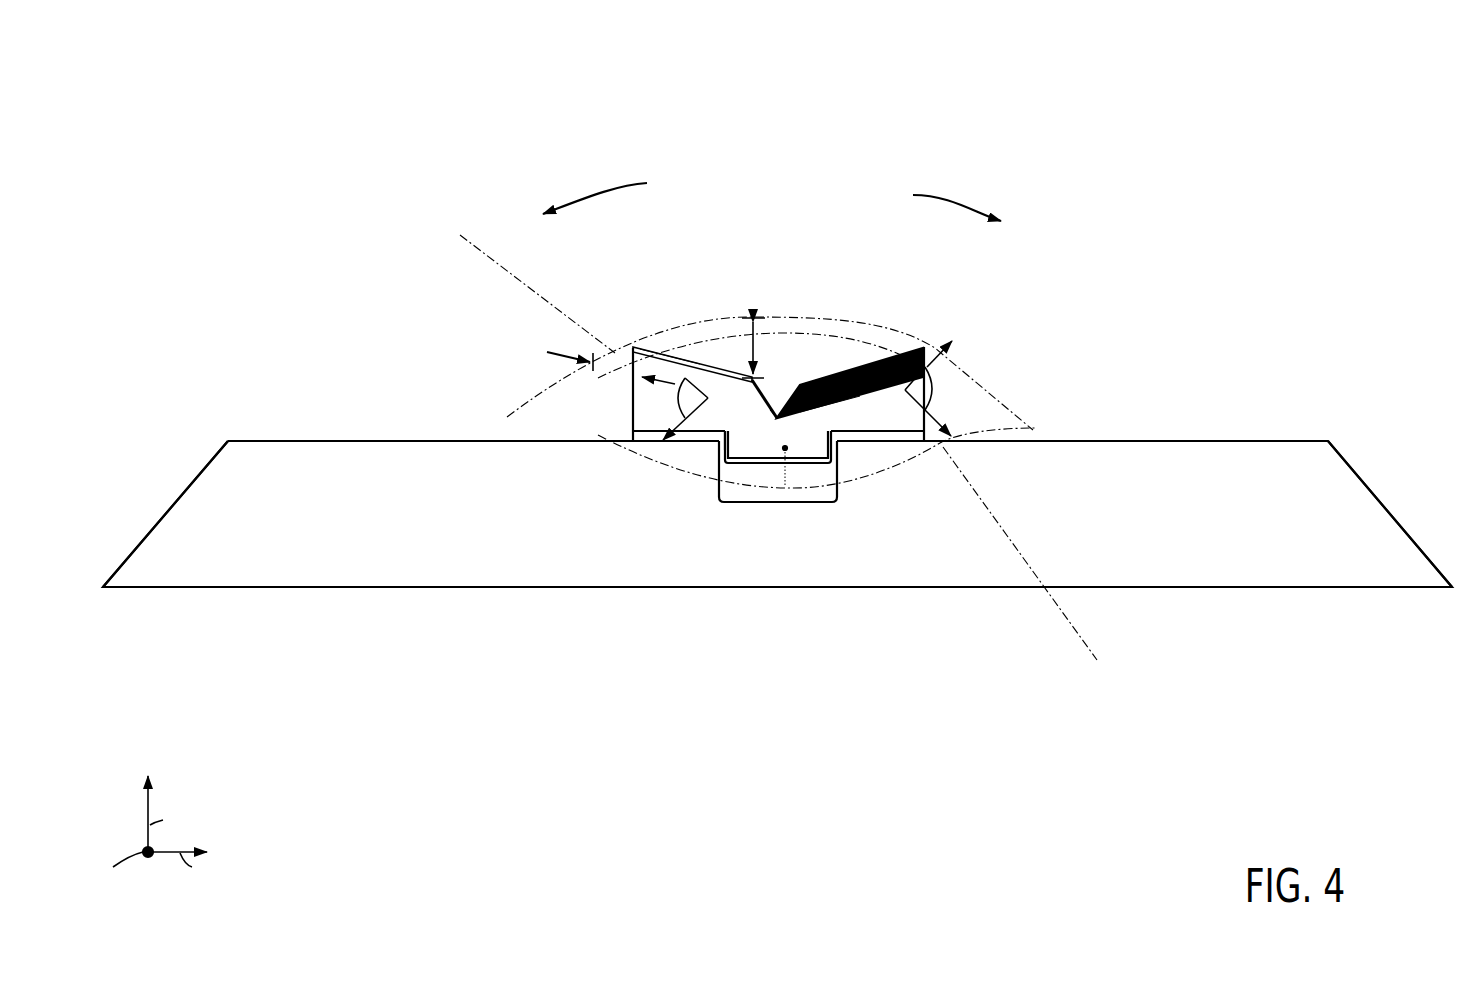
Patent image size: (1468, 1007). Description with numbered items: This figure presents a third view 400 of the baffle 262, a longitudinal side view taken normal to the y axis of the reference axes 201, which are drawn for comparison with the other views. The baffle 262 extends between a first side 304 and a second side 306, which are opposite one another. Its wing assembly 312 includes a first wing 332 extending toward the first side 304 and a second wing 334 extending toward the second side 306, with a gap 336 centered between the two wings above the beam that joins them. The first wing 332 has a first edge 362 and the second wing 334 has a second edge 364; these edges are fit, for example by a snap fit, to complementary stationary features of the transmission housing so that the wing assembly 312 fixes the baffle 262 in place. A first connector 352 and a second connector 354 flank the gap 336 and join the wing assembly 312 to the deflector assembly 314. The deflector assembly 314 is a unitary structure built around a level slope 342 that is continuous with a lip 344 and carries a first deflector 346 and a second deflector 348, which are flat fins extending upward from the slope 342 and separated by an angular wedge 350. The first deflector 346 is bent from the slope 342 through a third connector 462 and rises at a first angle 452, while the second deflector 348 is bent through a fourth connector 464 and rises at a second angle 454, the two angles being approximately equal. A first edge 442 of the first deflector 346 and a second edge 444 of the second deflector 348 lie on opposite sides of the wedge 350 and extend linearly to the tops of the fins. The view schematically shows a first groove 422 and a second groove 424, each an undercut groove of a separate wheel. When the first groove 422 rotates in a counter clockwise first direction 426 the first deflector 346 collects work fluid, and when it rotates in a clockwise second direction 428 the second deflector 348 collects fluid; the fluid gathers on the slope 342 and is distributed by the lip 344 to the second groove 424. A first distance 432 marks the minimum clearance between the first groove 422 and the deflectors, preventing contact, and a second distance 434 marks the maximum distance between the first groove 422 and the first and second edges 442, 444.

The third view 400 is at (242, 182).
The baffle 262 is at (1030, 172).
The reference axes 201 is at (146, 759).
The first side 304 is at (178, 472).
The second side 306 is at (1380, 479).
The wing assembly 312 is at (786, 598).
The deflector assembly 314 is at (945, 380).
The first wing 332 is at (355, 478).
The second wing 334 is at (1098, 478).
The gap 336 is at (755, 502).
The slope 342 is at (663, 413).
The lip 344 is at (763, 448).
The first deflector 346 is at (718, 387).
The second deflector 348 is at (870, 360).
The wedge 350 is at (778, 415).
The first connector 352 is at (647, 433).
The second connector 354 is at (883, 432).
The first edge 362 is at (217, 441).
The second edge 364 is at (1355, 463).
The first groove 422 is at (525, 279).
The second groove 424 is at (1031, 571).
The first direction 426 is at (553, 207).
The second direction 428 is at (1010, 220).
The first distance 432 is at (548, 352).
The second distance 434 is at (747, 317).
The first edge 442 is at (783, 378).
The second edge 444 is at (800, 385).
The first angle 452 is at (658, 351).
The second angle 454 is at (953, 340).
The third connector 462 is at (733, 410).
The fourth connector 464 is at (833, 407).